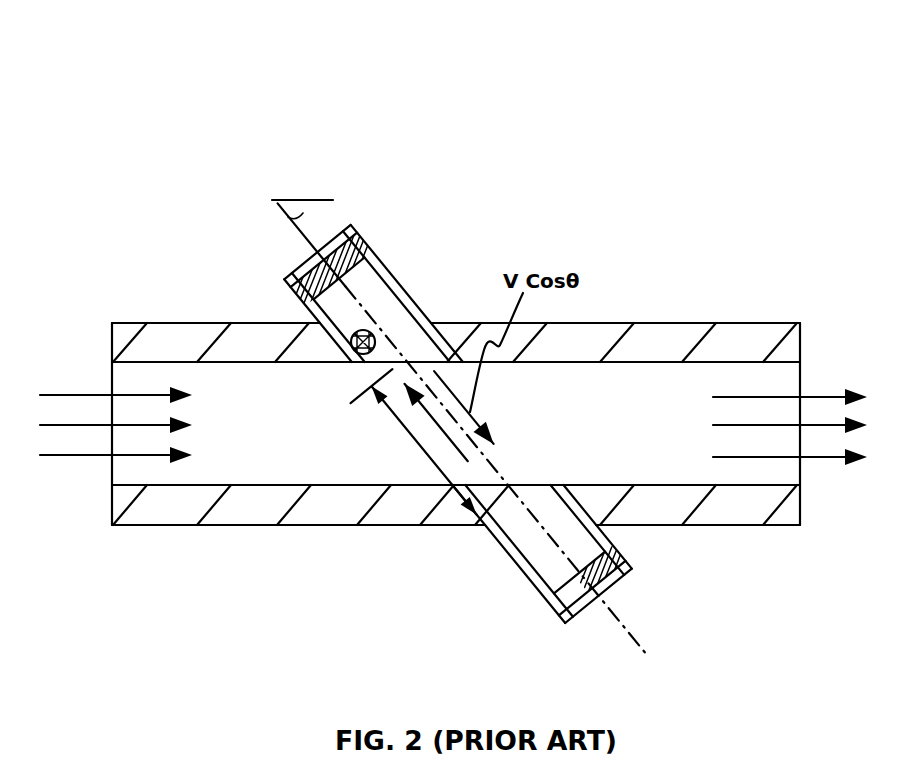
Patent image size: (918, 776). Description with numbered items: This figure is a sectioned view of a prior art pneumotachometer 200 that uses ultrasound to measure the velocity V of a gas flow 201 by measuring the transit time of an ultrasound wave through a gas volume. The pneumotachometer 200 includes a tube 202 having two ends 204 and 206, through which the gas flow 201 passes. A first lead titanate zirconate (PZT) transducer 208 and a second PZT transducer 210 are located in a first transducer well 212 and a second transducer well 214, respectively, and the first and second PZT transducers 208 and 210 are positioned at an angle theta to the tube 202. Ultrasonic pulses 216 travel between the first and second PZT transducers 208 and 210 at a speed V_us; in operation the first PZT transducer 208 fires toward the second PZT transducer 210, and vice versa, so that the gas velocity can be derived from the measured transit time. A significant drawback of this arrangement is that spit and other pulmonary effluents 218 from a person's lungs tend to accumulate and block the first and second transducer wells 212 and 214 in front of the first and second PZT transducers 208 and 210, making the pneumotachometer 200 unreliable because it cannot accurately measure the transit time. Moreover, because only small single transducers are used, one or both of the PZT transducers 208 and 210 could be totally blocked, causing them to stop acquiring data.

The pneumotachometer 200 is at (168, 182).
The gas flow 201 is at (80, 465).
The tube 202 is at (650, 337).
The end 204 is at (107, 366).
The end 206 is at (803, 375).
The first lead titanate zirconate (PZT) transducer 208 is at (348, 232).
The second PZT transducer 210 is at (615, 586).
The first transducer well 212 is at (418, 305).
The second transducer well 214 is at (496, 566).
The ultrasonic pulses 216 is at (413, 478).
The pulmonary effluents 218 is at (305, 308).